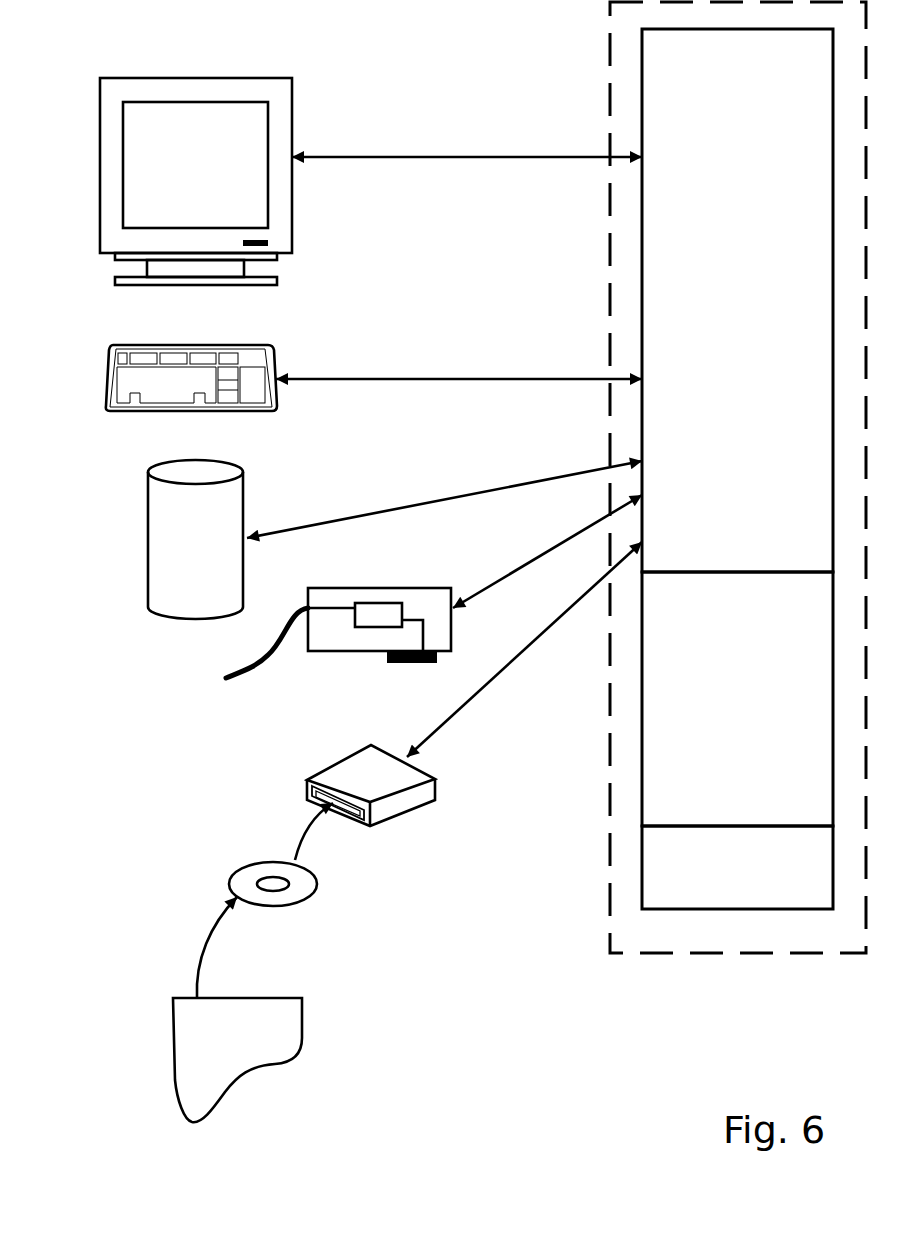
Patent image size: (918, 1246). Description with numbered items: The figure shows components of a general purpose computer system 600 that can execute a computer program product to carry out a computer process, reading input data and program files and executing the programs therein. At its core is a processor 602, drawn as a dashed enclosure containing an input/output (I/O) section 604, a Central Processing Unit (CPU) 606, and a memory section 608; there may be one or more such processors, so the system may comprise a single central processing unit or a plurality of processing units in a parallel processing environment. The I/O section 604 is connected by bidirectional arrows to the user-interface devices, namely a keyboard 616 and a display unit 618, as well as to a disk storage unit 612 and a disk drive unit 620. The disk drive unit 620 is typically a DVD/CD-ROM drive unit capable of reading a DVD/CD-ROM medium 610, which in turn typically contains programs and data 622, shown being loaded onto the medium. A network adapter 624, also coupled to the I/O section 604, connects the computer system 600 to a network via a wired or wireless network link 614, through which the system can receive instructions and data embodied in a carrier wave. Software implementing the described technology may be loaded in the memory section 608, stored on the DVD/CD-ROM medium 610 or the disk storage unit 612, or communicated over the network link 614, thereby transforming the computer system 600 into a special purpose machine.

The general purpose computer system 600 is at (573, 1047).
The processor 602 is at (611, 66).
The input/output (I/O) section 604 is at (719, 325).
The Central Processing Unit (CPU) 606 is at (719, 724).
The memory section 608 is at (719, 893).
The DVD/CD-ROM medium 610 is at (243, 866).
The disk storage unit 612 is at (148, 490).
The network link 614 is at (247, 683).
The keyboard 616 is at (152, 345).
The display unit 618 is at (162, 77).
The disk drive unit 620 is at (356, 778).
The programs and data 622 is at (303, 1020).
The network adapter 624 is at (352, 652).